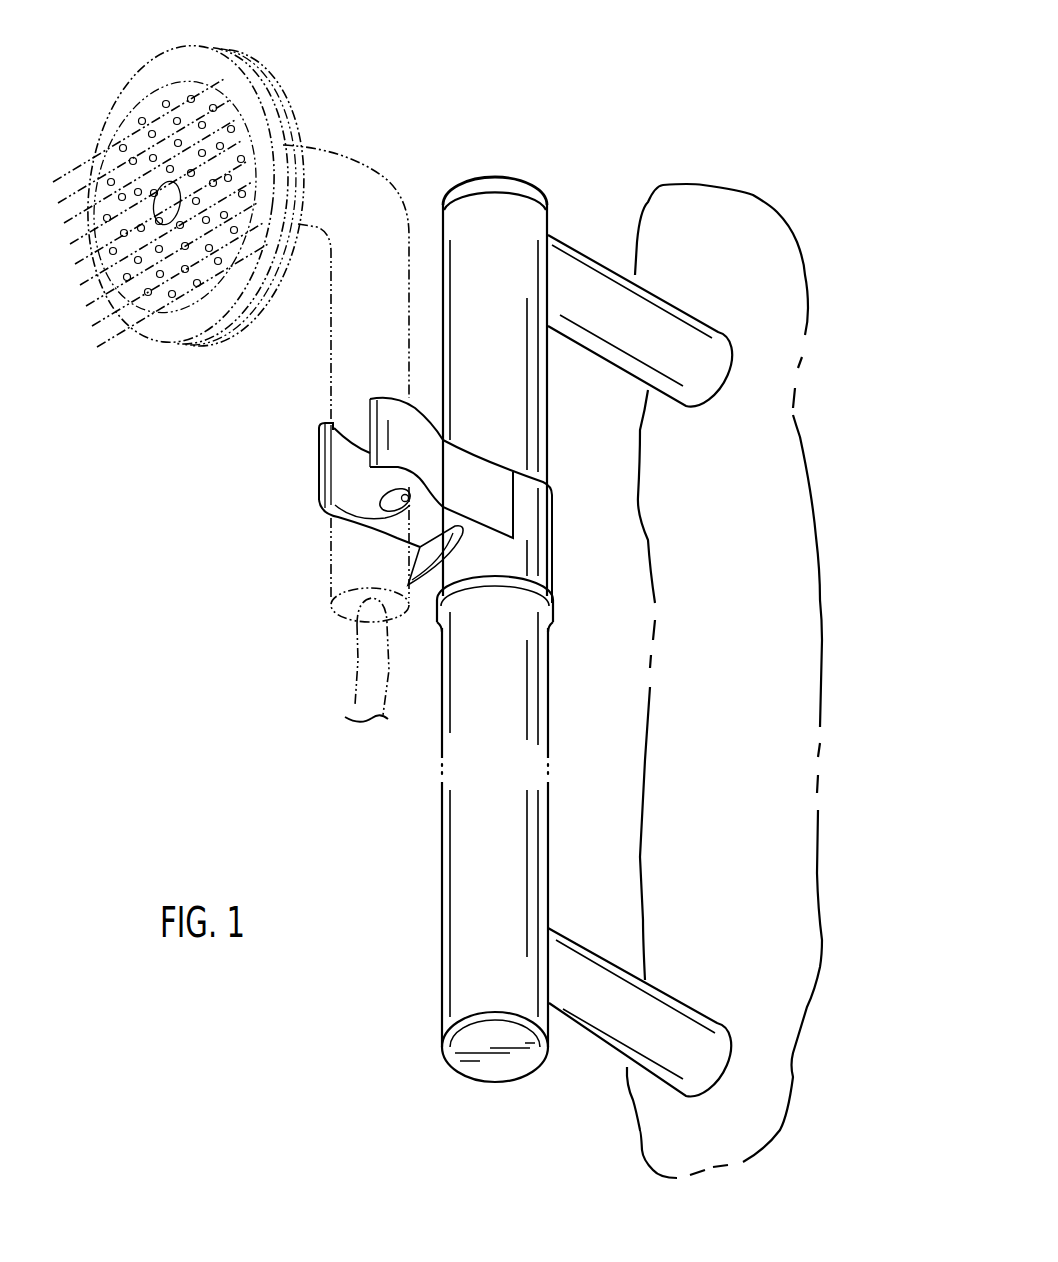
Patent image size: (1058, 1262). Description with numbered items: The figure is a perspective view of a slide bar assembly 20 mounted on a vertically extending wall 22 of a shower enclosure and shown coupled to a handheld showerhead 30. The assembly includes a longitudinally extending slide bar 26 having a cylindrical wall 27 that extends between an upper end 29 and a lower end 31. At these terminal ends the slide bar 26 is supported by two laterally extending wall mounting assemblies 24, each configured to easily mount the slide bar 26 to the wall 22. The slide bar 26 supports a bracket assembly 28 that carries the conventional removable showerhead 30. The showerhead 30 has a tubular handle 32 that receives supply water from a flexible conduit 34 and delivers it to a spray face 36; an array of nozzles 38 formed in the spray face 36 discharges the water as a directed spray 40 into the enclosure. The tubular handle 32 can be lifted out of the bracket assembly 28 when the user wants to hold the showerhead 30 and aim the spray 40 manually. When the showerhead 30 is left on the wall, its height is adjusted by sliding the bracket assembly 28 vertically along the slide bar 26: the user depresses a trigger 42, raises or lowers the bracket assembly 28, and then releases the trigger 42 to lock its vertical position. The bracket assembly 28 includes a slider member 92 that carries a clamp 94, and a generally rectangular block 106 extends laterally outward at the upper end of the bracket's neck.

The slide bar assembly 20 is at (484, 606).
The wall 22 is at (748, 612).
The wall mounting assembly 24 is at (602, 255).
The slide bar 26 is at (486, 613).
The cylindrical wall 27 is at (444, 897).
The bracket assembly 28 is at (394, 500).
The upper end 29 is at (471, 185).
The handheld showerhead 30 is at (186, 193).
The lower end 31 is at (462, 1044).
The tubular handle 32 is at (331, 372).
The flexible conduit 34 is at (357, 676).
The spray face 36 is at (143, 80).
The nozzles 38 is at (240, 96).
The spray 40 is at (134, 318).
The trigger 42 is at (408, 564).
The slider member 92 is at (553, 547).
The clamp 94 is at (308, 491).
The block 106 is at (476, 455).